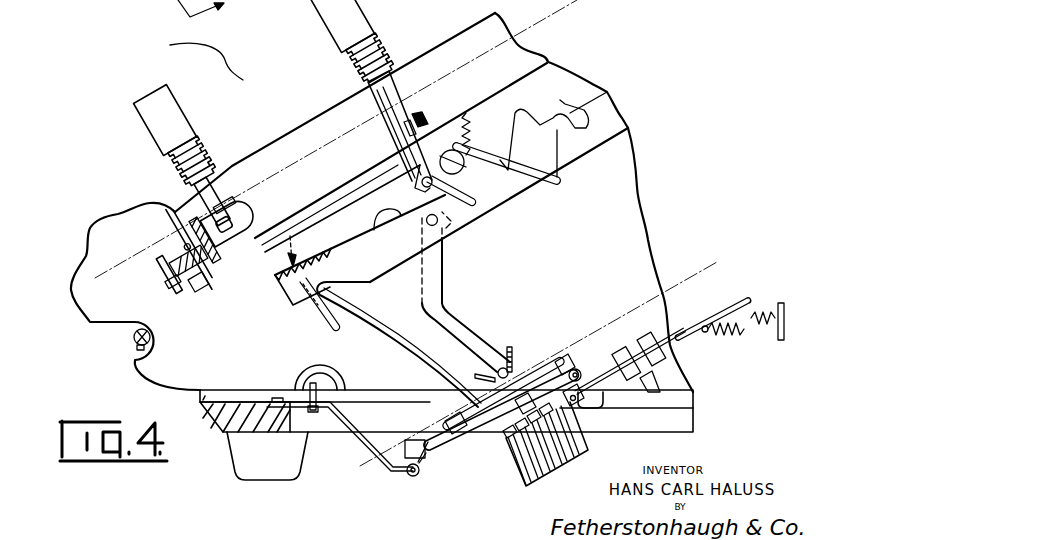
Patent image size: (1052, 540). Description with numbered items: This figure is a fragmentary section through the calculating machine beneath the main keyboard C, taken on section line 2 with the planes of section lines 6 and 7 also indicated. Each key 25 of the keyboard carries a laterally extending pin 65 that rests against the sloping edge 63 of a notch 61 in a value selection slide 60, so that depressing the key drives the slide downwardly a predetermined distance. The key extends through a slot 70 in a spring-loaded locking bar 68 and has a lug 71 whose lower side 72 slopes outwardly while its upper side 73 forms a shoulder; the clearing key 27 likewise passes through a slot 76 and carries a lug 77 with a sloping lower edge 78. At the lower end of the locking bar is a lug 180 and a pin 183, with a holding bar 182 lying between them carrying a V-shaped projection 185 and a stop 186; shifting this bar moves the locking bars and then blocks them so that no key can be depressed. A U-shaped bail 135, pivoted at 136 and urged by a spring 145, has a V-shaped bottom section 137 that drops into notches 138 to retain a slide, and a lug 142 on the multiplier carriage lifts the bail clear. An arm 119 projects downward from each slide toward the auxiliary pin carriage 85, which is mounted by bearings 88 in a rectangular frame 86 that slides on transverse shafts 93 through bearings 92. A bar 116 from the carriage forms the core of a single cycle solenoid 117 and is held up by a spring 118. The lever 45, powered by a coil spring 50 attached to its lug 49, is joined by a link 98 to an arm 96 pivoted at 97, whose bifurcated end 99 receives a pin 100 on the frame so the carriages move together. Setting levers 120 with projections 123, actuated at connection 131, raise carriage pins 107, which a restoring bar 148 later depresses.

The section line 2- 2 is at (210, 11).
The section line 6- 6 is at (95, 276).
The section line 7- 7 is at (717, 262).
The main keyboard C is at (197, 58).
The key 25 is at (325, 22).
The clearing key 27 is at (157, 98).
The lever 45 is at (327, 378).
The lug 49 is at (137, 348).
The coil spring 50 is at (132, 338).
The value selection slide 60 is at (613, 107).
The notch 61 is at (570, 127).
The sloping edge 63 is at (550, 180).
The pin 65 is at (450, 215).
The locking bar 68 is at (200, 285).
The slot 70 is at (383, 140).
The lug 71 is at (410, 127).
The lower side of lug 72 is at (433, 133).
The upper side of lug 73 is at (417, 120).
The slot 76 is at (197, 227).
The lug 77 is at (233, 210).
The lower edge 78 is at (247, 210).
The auxiliary pin carriage 85 is at (537, 370).
The rectangular frame 86 is at (455, 450).
The bearing 88 is at (523, 383).
The bearing 92 is at (415, 477).
The transverse shaft 93 is at (405, 476).
The arm 96 is at (360, 440).
The pivot 97 is at (277, 398).
The link 98 is at (303, 383).
The bifurcated end 99 is at (420, 443).
The pin 100 is at (400, 433).
The pin 107 is at (510, 433).
The bar 116 is at (625, 333).
The single cycle solenoid 117 is at (650, 340).
The spring 118 is at (737, 325).
The arm 119 is at (387, 344).
The setting lever 120 is at (577, 425).
The projection 123 is at (507, 450).
The connection 131 is at (523, 484).
The U-shaped bail 135 is at (352, 226).
The pivot 136 is at (411, 190).
The bottom section 137 is at (280, 298).
The notch 138 is at (291, 264).
The lug 142 is at (490, 200).
The spring 145 is at (473, 127).
The restoring bar 148 is at (488, 370).
The lug 180 is at (162, 258).
The holding bar 182 is at (187, 267).
The pin 183 is at (187, 248).
The V-shaped projection 185 is at (170, 210).
The stop 186 is at (180, 280).